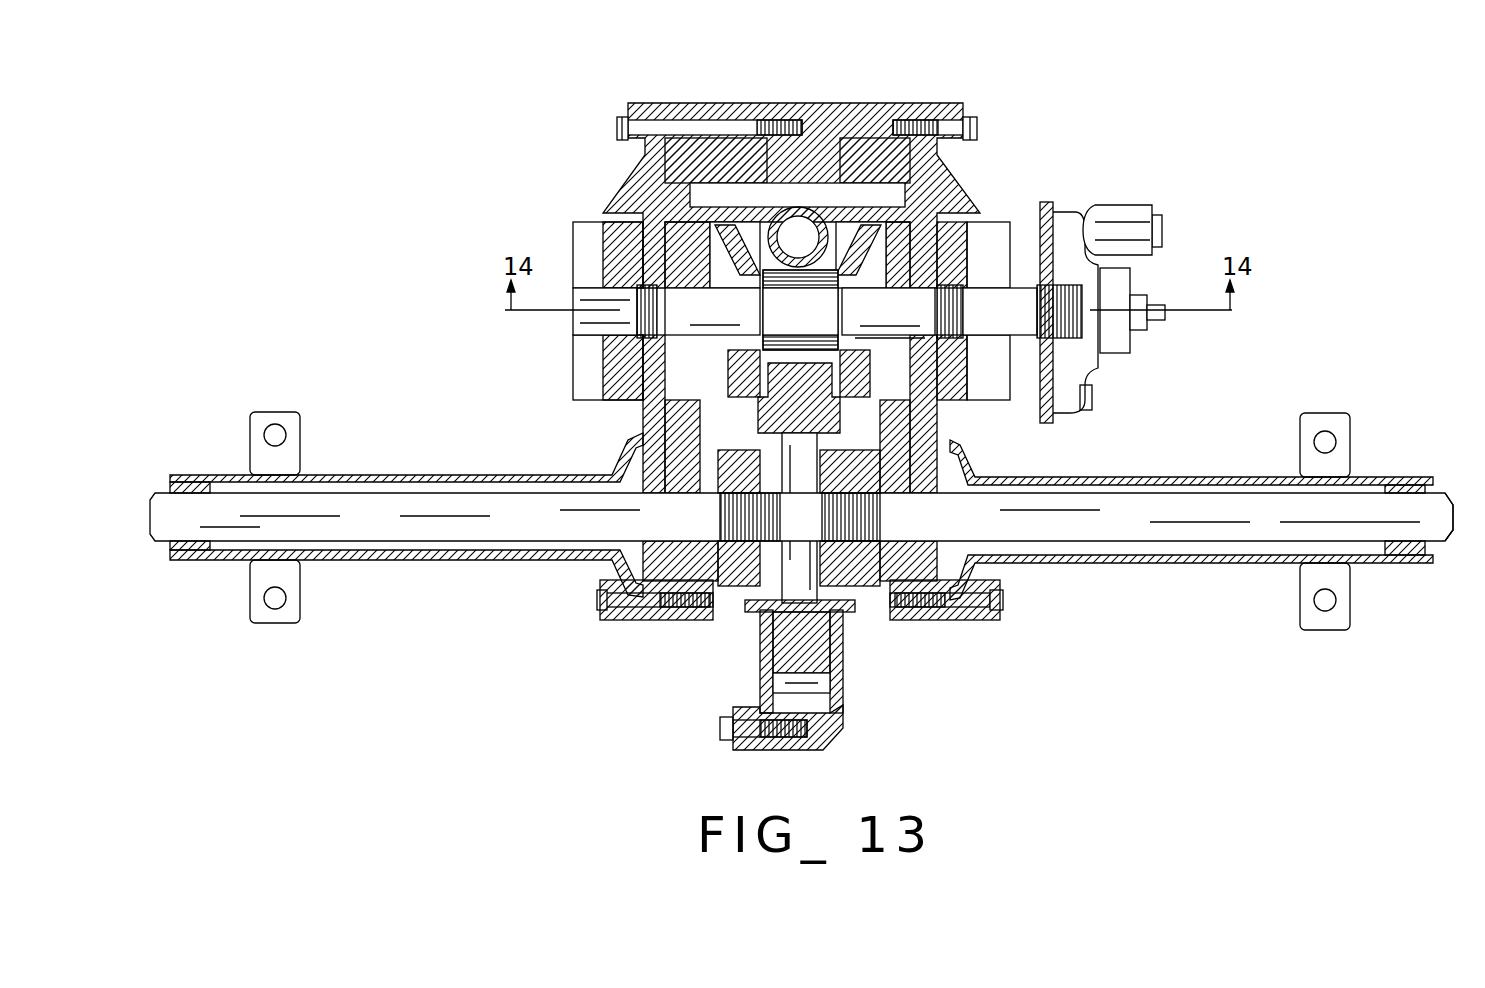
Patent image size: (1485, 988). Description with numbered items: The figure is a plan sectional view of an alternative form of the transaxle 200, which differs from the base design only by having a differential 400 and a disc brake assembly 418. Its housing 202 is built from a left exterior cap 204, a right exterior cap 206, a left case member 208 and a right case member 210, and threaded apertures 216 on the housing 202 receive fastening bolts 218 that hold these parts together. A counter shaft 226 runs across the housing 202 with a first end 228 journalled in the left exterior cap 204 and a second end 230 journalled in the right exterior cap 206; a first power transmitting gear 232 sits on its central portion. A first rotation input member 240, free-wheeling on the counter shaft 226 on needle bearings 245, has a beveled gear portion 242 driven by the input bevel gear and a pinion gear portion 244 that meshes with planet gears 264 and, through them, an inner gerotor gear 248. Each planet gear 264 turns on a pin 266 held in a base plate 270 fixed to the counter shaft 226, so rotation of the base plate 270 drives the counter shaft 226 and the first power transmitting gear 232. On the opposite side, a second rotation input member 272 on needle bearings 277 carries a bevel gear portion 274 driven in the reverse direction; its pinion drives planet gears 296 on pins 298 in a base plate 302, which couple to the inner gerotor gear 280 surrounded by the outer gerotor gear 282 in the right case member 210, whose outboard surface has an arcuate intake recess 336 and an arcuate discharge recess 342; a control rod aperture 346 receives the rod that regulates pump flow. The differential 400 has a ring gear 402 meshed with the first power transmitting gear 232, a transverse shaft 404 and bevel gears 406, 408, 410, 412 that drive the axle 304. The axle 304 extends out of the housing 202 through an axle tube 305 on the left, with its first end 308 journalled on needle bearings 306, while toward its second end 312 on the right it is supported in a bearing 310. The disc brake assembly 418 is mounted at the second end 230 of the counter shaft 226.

The transaxle 200 is at (1068, 101).
The housing 202 is at (798, 104).
The left exterior cap 204 is at (637, 172).
The right exterior cap 206 is at (953, 173).
The left case member 208 is at (738, 112).
The right case member 210 is at (877, 112).
The threaded apertures 216 is at (647, 112).
The fastening bolts 218 is at (617, 128).
The counter shaft 226 is at (888, 311).
The first end 228 is at (600, 320).
The second end 230 is at (997, 290).
The first power transmitting gear 232 is at (800, 310).
The first rotation input member 240 is at (759, 227).
The beveled gear portion 242 is at (737, 260).
The pinion gear portion 244 is at (677, 273).
The needle bearings 245 is at (745, 290).
The inner gerotor gear 248 is at (648, 210).
The planet gears 264 is at (640, 410).
The pin 266 is at (667, 370).
The base plate 270 is at (637, 355).
The second rotation input member 272 is at (857, 224).
The bevel gear portion 274 is at (870, 257).
The needle bearings 277 is at (862, 338).
The inner gerotor gear 280 is at (1060, 204).
The outer gerotor gear 282 is at (943, 167).
The planet gears 296 is at (1000, 420).
The pin 298 is at (1053, 420).
The base plate 302 is at (965, 328).
The axle 304 is at (1140, 505).
The axle tube 305 is at (437, 523).
The needle bearings 306 is at (203, 487).
The first end 308 is at (166, 505).
The bearing 310 is at (1400, 490).
The second end 312 is at (1442, 503).
The arcuate intake recess 336 is at (900, 435).
The arcuate discharge recess 342 is at (950, 207).
The control rod aperture 346 is at (798, 222).
The differential 400 is at (763, 657).
The ring gear 402 is at (843, 668).
The transverse shaft 404 is at (853, 637).
The bevel gear 406 is at (757, 600).
The bevel gear 408 is at (722, 500).
The bevel gear 410 is at (768, 453).
The bevel gear 412 is at (898, 615).
The disc brake assembly 418 is at (1075, 203).